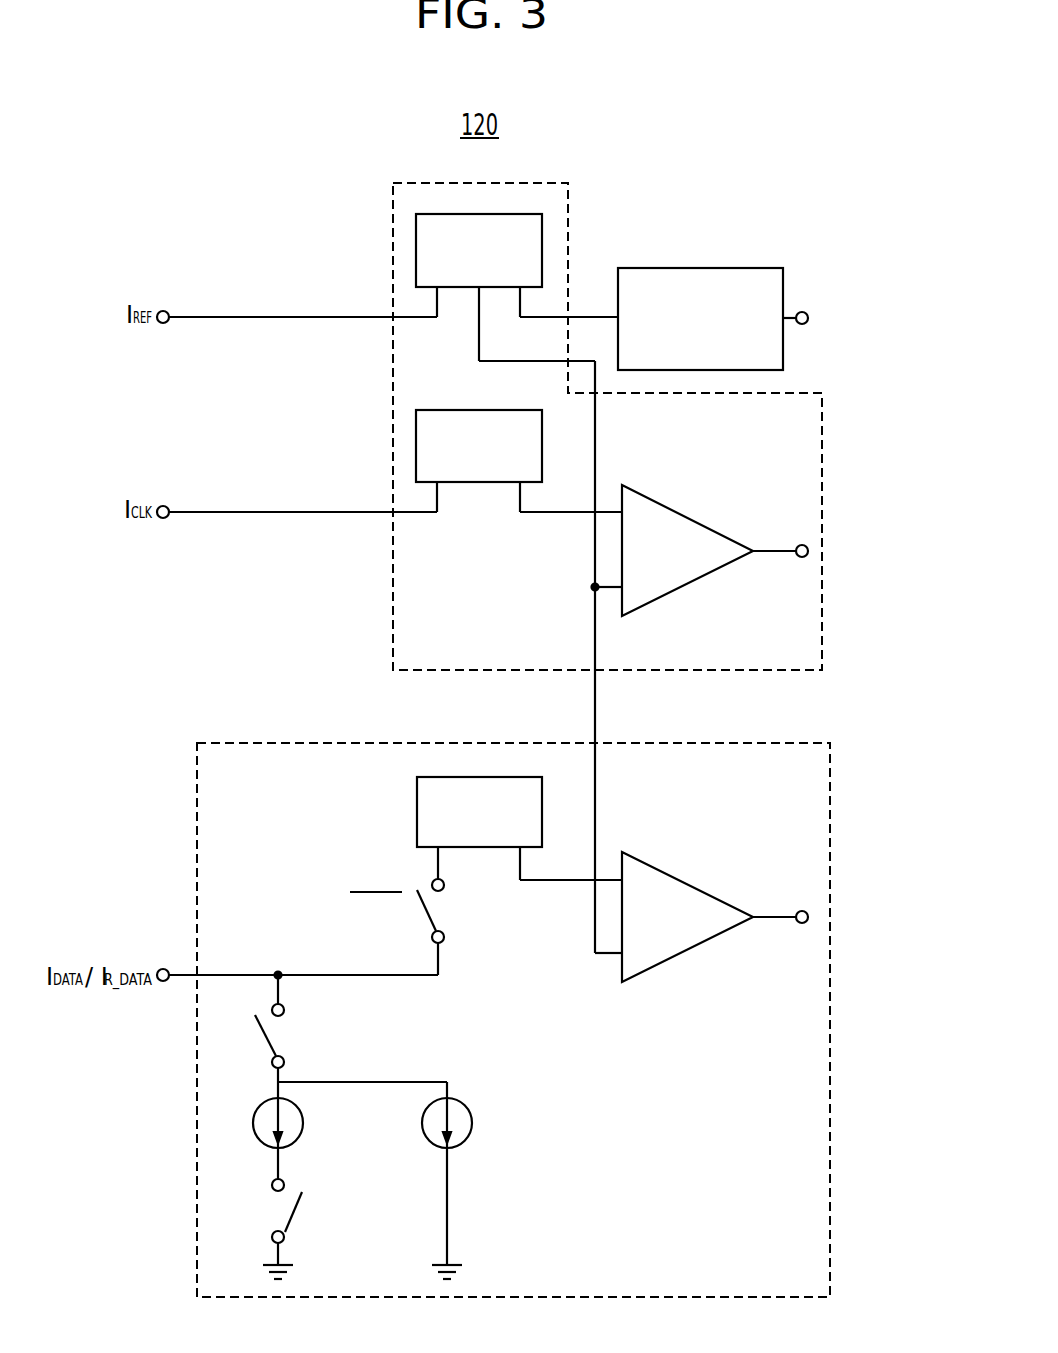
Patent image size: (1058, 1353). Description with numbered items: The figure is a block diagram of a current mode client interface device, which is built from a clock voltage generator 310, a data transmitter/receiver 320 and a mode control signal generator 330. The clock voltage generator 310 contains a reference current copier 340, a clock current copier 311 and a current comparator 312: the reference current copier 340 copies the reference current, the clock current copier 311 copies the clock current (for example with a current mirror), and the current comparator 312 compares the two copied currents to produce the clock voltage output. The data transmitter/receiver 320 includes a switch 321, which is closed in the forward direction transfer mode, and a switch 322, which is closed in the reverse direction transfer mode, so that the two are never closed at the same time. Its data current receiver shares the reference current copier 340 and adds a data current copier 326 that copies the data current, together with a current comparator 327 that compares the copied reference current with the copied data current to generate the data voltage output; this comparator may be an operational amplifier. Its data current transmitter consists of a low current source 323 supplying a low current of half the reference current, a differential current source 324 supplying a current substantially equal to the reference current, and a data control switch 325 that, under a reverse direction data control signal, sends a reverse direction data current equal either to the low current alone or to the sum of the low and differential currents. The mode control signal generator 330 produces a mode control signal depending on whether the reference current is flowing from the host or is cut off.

The clock voltage generator 310 is at (393, 582).
The clock current copier 311 is at (416, 444).
The current comparator 312 is at (690, 585).
The data transmitter/receiver 320 is at (197, 849).
The switch 321 is at (430, 908).
The switch 322 is at (270, 1031).
The low current source 323 is at (472, 1123).
The differential current source 324 is at (303, 1123).
The data control switch 325 is at (290, 1207).
The data current copier 326 is at (417, 810).
The current comparator 327 is at (690, 951).
The mode control signal generator 330 is at (703, 268).
The reference current copier 340 is at (416, 249).